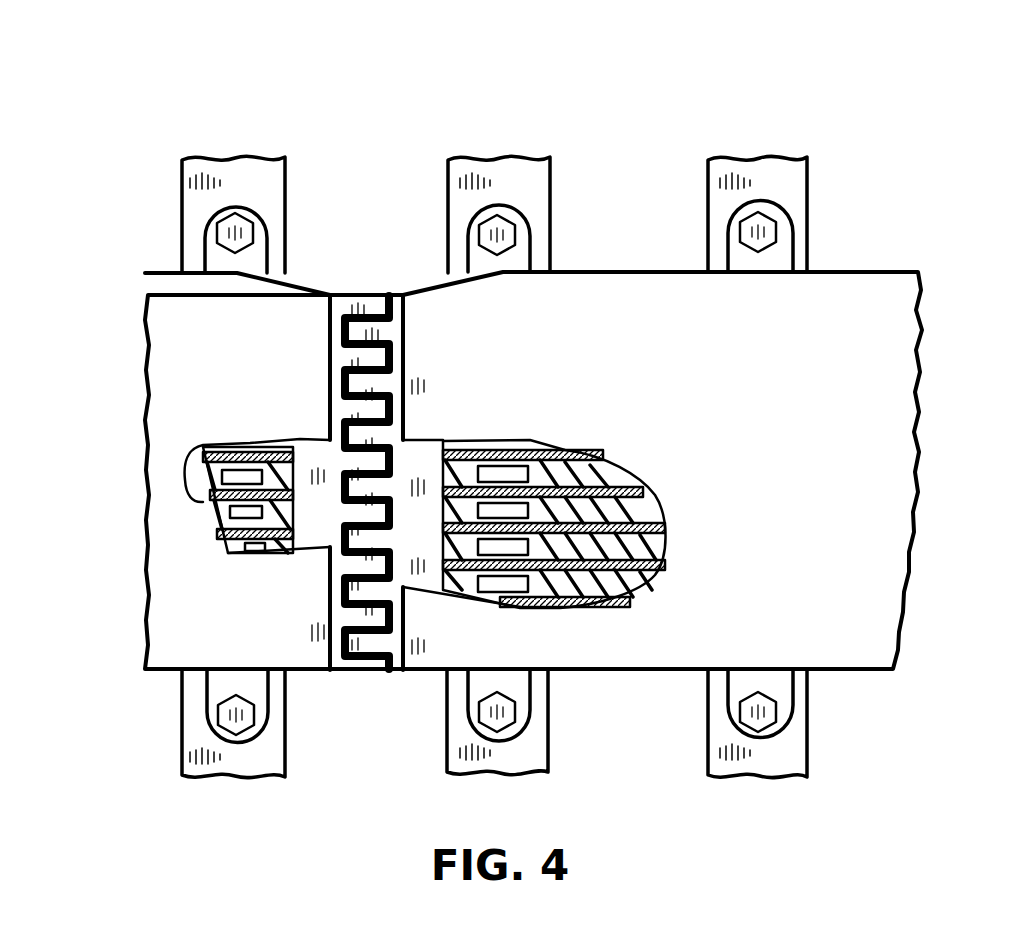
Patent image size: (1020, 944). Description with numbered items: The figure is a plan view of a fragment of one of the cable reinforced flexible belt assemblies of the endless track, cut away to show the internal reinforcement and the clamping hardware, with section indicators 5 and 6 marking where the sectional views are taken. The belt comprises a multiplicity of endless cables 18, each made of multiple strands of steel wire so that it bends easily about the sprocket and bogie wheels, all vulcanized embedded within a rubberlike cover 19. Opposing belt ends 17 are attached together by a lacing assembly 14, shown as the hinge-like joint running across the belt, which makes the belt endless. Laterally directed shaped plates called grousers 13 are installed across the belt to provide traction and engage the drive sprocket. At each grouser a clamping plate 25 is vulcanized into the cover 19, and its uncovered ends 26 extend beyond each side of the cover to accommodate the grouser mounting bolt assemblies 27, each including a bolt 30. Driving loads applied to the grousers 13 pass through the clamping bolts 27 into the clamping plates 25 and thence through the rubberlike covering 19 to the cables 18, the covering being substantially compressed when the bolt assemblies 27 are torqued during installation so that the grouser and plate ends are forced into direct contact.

The grouser 13 is at (268, 183).
The lacing assembly 14 is at (355, 672).
The belt end 17 is at (425, 300).
The endless cable 18 is at (200, 445).
The rubberlike cover 19 is at (876, 332).
The clamping plate 25 is at (213, 262).
The uncovered end 26 is at (470, 258).
The grouser mounting bolt assembly 27 is at (263, 718).
The bolt 30 is at (768, 240).
The section line 5- 5 is at (813, 140).
The section line 6- 6 is at (123, 607).